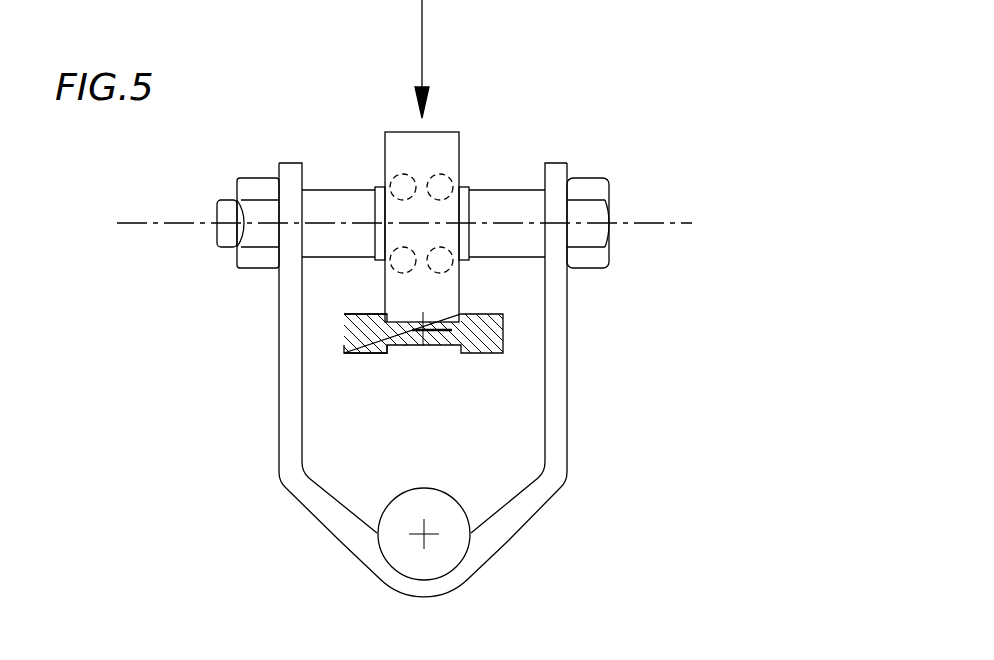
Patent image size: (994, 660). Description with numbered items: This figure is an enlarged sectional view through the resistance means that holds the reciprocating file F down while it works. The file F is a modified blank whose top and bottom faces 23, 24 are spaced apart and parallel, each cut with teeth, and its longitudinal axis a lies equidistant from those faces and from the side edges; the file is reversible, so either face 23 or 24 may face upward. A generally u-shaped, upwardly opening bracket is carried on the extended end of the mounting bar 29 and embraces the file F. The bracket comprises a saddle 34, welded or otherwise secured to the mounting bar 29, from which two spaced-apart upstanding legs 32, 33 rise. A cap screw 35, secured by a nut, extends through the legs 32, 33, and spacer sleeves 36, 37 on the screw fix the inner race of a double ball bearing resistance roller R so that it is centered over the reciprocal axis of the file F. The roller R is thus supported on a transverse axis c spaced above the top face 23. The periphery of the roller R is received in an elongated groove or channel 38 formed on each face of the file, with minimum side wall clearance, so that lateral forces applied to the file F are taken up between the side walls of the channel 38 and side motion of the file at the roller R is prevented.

The top face 23 is at (345, 314).
The bottom face 24 is at (346, 354).
The mounting bar 29 is at (453, 498).
The upstanding leg 32 is at (292, 423).
The upstanding leg 33 is at (557, 425).
The saddle 34 is at (360, 538).
The cap screw 35 is at (215, 214).
The spacer sleeve 36 is at (337, 190).
The spacer sleeve 37 is at (504, 190).
The groove or channel 38 is at (442, 326).
The resistance roller R is at (460, 113).
The file F is at (518, 330).
The longitudinal axis a is at (426, 332).
The pin center b is at (426, 535).
The transverse axis c is at (162, 226).